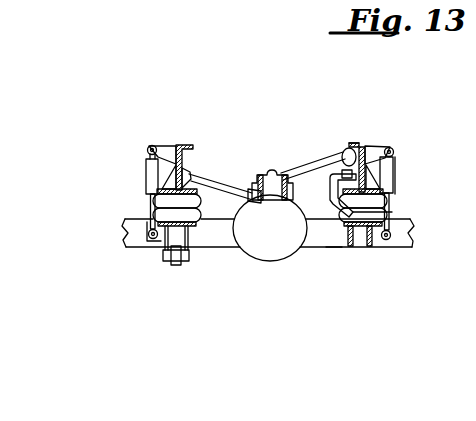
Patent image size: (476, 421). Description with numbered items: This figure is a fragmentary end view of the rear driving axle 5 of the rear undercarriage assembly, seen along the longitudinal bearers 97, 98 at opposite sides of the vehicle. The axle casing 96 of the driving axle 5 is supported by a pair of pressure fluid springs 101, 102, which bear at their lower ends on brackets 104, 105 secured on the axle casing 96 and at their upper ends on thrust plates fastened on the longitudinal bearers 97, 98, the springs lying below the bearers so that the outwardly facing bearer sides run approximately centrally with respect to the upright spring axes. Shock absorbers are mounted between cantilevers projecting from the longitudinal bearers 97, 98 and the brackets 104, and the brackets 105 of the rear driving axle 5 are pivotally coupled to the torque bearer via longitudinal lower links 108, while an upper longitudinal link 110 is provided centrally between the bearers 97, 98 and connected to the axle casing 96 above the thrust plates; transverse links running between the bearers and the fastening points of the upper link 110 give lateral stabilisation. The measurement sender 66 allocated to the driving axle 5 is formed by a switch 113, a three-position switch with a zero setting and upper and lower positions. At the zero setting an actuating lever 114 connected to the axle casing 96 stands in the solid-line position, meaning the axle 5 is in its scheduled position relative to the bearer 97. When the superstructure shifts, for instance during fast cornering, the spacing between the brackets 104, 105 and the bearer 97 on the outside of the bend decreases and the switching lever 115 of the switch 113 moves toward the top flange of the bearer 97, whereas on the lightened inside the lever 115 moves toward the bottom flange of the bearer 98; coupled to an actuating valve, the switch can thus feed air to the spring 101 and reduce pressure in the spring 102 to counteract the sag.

The rear driving axle 5 is at (216, 262).
The measurement sender 66 is at (318, 212).
The axle casing 96 is at (334, 243).
The longitudinal bearer 97 is at (362, 142).
The longitudinal bearer 98 is at (190, 144).
The pressure fluid spring means 101 is at (147, 226).
The pressure fluid spring means 102 is at (394, 209).
The bracket 104 is at (369, 252).
The bracket 105 is at (161, 247).
The longitudinal lower link 108 is at (176, 268).
The upper longitudinal link 110 is at (259, 175).
The switch 113 is at (392, 181).
The actuating lever 114 is at (332, 196).
The switching lever 115 is at (348, 143).